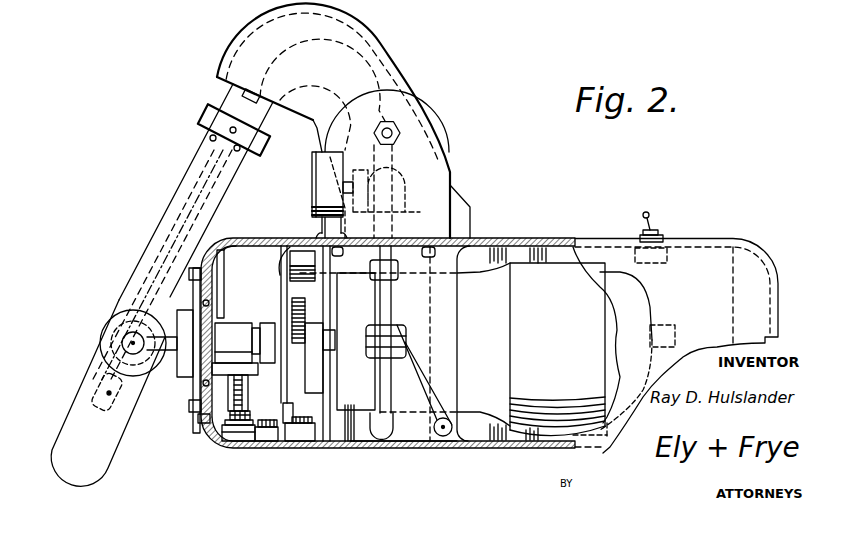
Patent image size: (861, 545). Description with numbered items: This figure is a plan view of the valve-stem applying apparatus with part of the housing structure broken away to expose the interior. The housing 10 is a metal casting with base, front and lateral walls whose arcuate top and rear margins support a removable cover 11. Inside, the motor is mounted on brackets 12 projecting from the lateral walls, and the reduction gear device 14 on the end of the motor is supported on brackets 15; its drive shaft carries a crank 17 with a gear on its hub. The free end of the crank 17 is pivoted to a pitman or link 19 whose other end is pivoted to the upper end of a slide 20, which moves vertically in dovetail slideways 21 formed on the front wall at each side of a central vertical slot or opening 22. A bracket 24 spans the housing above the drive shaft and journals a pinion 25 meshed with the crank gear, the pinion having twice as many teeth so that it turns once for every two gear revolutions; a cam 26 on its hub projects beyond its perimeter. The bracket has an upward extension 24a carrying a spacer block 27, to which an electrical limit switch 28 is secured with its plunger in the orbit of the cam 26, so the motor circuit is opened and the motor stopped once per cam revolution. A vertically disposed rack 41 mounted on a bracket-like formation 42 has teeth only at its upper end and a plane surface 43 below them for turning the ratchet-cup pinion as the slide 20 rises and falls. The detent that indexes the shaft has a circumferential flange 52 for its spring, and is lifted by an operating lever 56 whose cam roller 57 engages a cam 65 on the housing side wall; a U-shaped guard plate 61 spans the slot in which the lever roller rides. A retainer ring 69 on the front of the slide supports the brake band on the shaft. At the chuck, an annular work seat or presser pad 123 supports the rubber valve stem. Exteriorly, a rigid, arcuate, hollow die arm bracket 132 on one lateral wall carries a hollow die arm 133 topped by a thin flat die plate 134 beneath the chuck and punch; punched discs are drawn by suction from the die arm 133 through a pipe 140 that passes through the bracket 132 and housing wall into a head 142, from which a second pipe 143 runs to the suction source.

The housing 10 is at (337, 449).
The removable cover 11 is at (710, 257).
The brackets 12 is at (518, 256).
The reduction gear device 14 is at (393, 448).
The brackets 15 is at (322, 236).
The crank 17 is at (268, 326).
The pitman or link 19 is at (248, 326).
The slide 20 is at (186, 380).
The dovetail slideways 21 is at (193, 280).
The central vertical slot or opening 22 is at (224, 312).
The bracket 24 is at (290, 280).
The upward extension 24a is at (270, 442).
The pinion 25 is at (304, 313).
The cam 26 is at (318, 326).
The spacer block 27 is at (300, 441).
The electrical limit switch 28 is at (330, 441).
The rack 41 is at (310, 248).
The bracket-like formation 42 is at (272, 250).
The plane surface 43 is at (556, 272).
The circumferential flange 52 is at (181, 366).
The operating lever 56 is at (208, 423).
The cam roller 57 is at (230, 443).
The U-shaped guard plate 61 is at (266, 368).
The cam 65 is at (248, 441).
The retainer ring 69 is at (200, 299).
The annular work seat or presser pad 123 is at (100, 342).
The die arm bracket 132 is at (386, 90).
The die arm 133 is at (197, 165).
The die plate 134 is at (97, 463).
The pipe 140 is at (380, 393).
The head 142 is at (446, 138).
The second pipe 143 is at (445, 395).